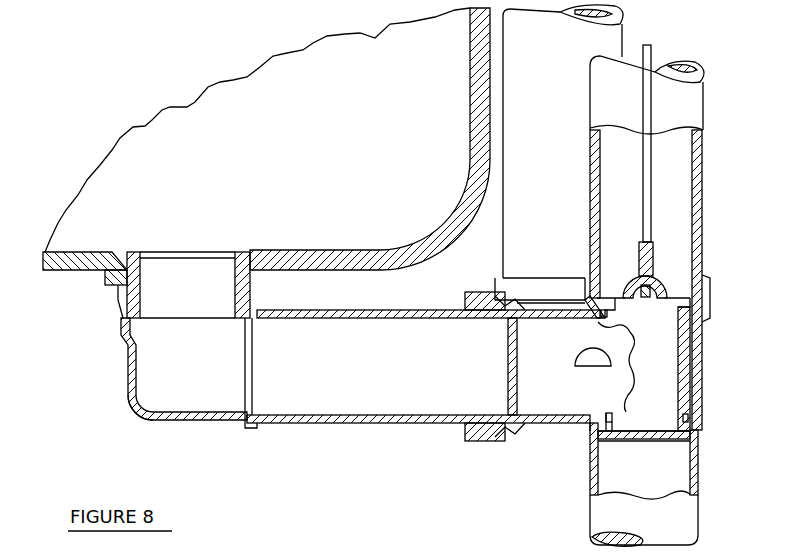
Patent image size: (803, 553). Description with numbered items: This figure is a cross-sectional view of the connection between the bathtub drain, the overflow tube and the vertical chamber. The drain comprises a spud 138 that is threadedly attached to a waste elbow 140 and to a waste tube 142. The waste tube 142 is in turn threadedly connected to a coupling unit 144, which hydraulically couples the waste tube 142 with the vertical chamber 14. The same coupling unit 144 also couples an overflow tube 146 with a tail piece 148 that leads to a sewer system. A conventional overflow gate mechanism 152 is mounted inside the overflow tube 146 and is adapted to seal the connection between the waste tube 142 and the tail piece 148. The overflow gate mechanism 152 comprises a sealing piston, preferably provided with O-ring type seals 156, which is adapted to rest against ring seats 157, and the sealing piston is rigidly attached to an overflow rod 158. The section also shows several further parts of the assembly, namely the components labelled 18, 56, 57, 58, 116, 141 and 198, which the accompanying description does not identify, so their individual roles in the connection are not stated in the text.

The vertical chamber 14 is at (505, 249).
The container wall 18 is at (450, 212).
The nut 56 is at (103, 283).
The plate 57 is at (113, 252).
The cap corner 58 is at (140, 408).
The ring 116 is at (244, 252).
The spud 138 is at (135, 252).
The waste elbow 140 is at (192, 420).
The nut 141 is at (480, 441).
The waste tube 142 is at (412, 423).
The coupling unit 144 is at (540, 425).
The overflow tube 146 is at (703, 85).
The tail piece 148 is at (592, 513).
The overflow gate mechanism 152 is at (610, 246).
The O-ring type seals 156 is at (606, 414).
The ring seats 157 is at (590, 367).
The overflow rod 158 is at (653, 213).
The housing 198 is at (690, 470).